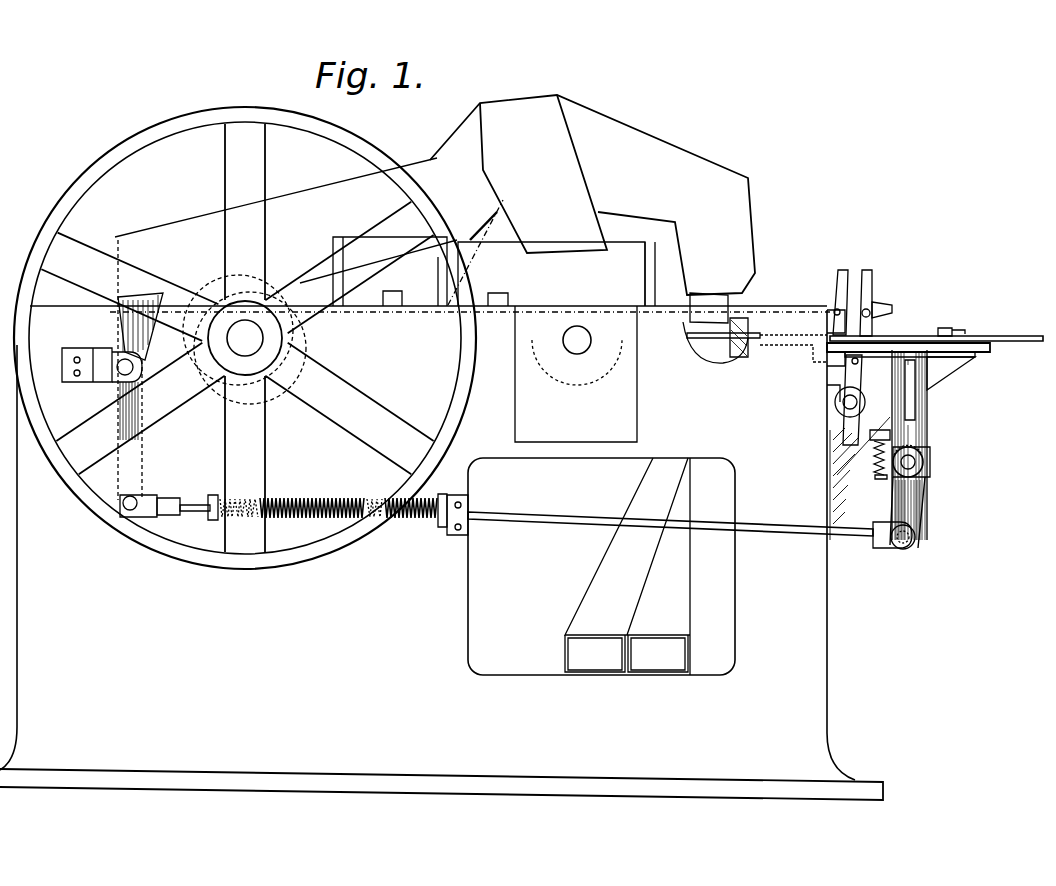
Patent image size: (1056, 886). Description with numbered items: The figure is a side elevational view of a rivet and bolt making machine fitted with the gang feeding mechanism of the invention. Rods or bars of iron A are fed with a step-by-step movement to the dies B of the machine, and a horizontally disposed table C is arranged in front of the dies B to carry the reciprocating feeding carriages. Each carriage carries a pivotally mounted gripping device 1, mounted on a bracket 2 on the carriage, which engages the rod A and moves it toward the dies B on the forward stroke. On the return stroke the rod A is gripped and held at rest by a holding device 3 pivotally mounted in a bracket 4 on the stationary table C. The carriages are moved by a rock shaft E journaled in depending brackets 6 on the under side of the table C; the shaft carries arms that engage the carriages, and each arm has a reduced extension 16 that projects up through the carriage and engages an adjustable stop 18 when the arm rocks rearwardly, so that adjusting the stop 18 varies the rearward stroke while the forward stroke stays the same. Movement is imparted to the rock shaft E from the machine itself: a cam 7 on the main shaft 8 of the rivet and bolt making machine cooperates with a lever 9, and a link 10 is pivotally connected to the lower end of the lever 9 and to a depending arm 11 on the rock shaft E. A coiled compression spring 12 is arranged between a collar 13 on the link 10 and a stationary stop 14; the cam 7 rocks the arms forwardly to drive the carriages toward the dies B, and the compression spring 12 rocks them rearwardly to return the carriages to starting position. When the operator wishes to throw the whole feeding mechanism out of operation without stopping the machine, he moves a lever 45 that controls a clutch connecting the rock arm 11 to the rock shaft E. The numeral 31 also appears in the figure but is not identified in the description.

The gripping device 1 is at (872, 287).
The bracket 2 is at (868, 345).
The holding device 3 is at (840, 283).
The bracket 4 is at (830, 318).
The depending brackets 6 is at (897, 404).
The cam 7 is at (180, 338).
The main shaft 8 is at (250, 345).
The lever 9 is at (133, 437).
The link 10 is at (557, 522).
The depending arm 11 is at (922, 512).
The coiled compression spring 12 is at (401, 521).
The collar 13 is at (218, 500).
The stationary stop 14 is at (450, 493).
The reduced extension 16 is at (890, 330).
The adjustable stop 18 is at (935, 330).
The spring 31 is at (868, 476).
The lever 45 is at (912, 398).
The rods or bars A is at (1003, 336).
The dies B is at (720, 305).
The table C is at (982, 356).
The rock shaft E is at (920, 450).